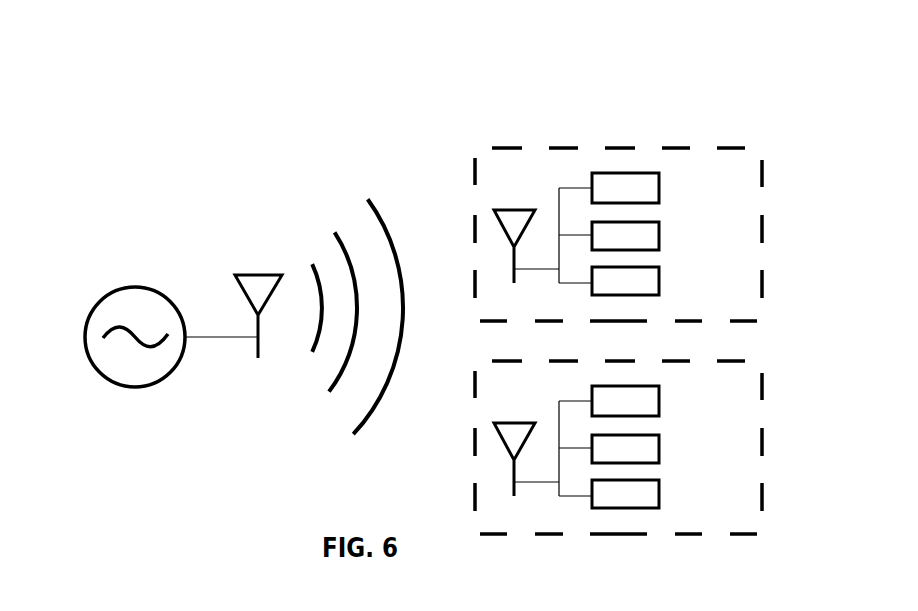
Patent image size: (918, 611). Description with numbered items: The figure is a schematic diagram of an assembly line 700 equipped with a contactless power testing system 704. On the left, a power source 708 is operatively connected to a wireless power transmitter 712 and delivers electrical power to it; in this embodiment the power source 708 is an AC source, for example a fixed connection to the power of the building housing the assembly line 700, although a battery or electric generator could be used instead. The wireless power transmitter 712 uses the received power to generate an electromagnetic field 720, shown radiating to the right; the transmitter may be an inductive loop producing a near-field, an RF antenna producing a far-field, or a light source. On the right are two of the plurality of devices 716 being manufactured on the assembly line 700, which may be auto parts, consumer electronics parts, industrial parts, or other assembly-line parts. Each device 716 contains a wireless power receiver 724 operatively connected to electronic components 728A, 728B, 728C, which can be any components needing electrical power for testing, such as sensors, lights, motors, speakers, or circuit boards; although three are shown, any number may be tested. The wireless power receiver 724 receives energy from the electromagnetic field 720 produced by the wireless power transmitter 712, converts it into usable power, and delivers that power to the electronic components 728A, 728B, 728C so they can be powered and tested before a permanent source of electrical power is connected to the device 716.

The assembly line 700 is at (693, 102).
The contactless power testing system 704 is at (360, 142).
The power source 708 is at (122, 290).
The wireless power transmitter 712 is at (262, 275).
The device 716 is at (735, 148).
The electromagnetic field 720 is at (313, 397).
The wireless power receiver 724 is at (500, 210).
The electronic component 728A is at (659, 180).
The electronic component 728B is at (659, 228).
The electronic component 728C is at (659, 272).